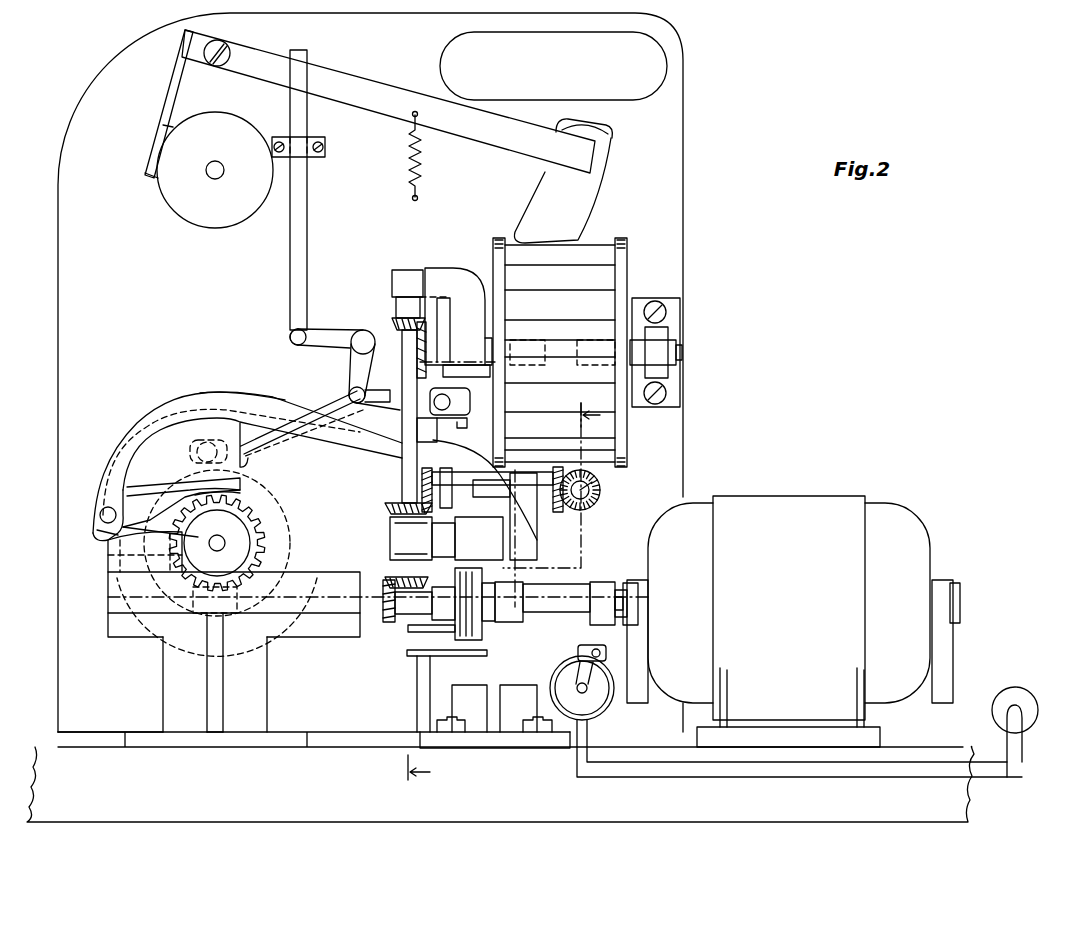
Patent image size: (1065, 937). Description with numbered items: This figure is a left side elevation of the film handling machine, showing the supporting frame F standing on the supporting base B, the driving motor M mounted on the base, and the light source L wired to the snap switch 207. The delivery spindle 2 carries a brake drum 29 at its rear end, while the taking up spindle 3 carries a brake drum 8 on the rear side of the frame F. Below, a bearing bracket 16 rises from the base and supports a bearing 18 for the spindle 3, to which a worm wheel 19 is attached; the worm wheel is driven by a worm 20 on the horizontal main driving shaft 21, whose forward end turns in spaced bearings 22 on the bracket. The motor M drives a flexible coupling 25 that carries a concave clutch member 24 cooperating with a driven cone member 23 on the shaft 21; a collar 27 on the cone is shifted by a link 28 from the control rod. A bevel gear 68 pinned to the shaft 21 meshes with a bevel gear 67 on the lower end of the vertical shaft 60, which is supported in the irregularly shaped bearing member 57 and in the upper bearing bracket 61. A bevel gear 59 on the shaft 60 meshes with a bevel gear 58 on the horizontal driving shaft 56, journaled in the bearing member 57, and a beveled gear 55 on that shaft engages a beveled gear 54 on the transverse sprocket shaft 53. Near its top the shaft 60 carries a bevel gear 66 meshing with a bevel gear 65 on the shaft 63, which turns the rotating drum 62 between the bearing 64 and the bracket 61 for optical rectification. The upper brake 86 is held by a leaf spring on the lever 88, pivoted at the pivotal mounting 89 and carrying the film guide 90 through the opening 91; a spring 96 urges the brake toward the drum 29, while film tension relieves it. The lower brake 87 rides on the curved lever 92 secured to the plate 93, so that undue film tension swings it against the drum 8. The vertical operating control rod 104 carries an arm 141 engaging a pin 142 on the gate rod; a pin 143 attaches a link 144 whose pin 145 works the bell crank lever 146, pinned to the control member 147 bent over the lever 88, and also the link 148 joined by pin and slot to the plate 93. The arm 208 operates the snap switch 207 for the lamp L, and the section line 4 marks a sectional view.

The delivery spindle 2 is at (212, 175).
The taking up spindle 3 is at (210, 548).
The section line 4 is at (508, 583).
The brake drum 8 is at (180, 506).
The bearing bracket 16 is at (172, 700).
The bearing 18 is at (200, 540).
The worm wheel 19 is at (100, 511).
The worm 20 is at (205, 630).
The main driving shaft 21 is at (395, 610).
The spaced bearings 22 is at (120, 630).
The driven cone member 23 is at (462, 640).
The concave clutch member 24 is at (492, 622).
The flexible coupling 25 is at (580, 590).
The collar 27 is at (420, 633).
The link 28 is at (415, 660).
The brake drum 29 is at (233, 212).
The shaft 53 is at (600, 486).
The beveled gear 54 is at (602, 498).
The beveled gear 55 is at (580, 505).
The horizontal driving shaft 56 is at (520, 530).
The bearing member 57 is at (392, 537).
The bevel gear 58 is at (402, 474).
The bevel gear 59 is at (395, 505).
The shaft 60 is at (400, 335).
The upper bearing bracket 61 is at (425, 300).
The rotating drum 62 is at (612, 262).
The shaft 63 is at (682, 350).
The bearing 64 is at (670, 330).
The bevel gear 65 is at (425, 315).
The bevel gear 66 is at (392, 312).
The bevel gear 67 is at (395, 580).
The bevel gear 68 is at (385, 625).
The upper brake 86 is at (150, 180).
The lower brake 87 is at (260, 487).
The lever 88 is at (378, 90).
The pivotal mounting 89 is at (225, 48).
The film guide 90 is at (612, 135).
The opening 91 is at (580, 204).
The curved lever 92 is at (215, 400).
The plate 93 is at (112, 533).
The spring 96 is at (418, 182).
The operating control rod 104 is at (417, 710).
The arm 141 is at (440, 440).
The pin 142 is at (468, 428).
The pin 143 is at (450, 403).
The link 144 is at (350, 400).
The pin 145 is at (352, 390).
The bell crank lever 146 is at (320, 347).
The control member 147 is at (308, 228).
The link 148 is at (280, 435).
The snap switch 207 is at (600, 710).
The arm 208 is at (600, 680).
The supporting frame F is at (370, 372).
The supporting base B is at (500, 777).
The driving motor M is at (787, 621).
The light source L is at (1028, 700).